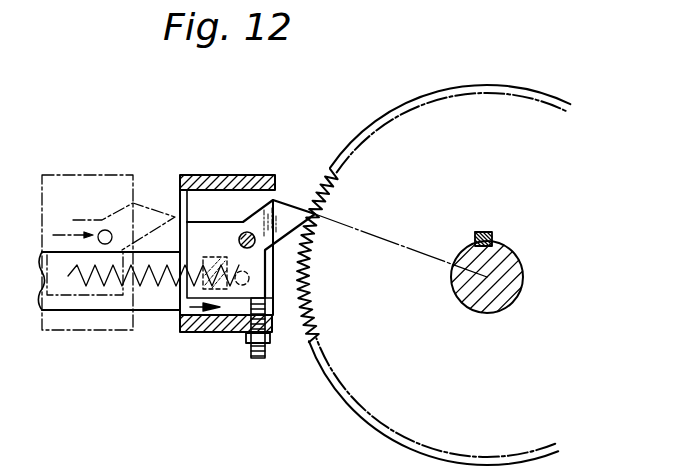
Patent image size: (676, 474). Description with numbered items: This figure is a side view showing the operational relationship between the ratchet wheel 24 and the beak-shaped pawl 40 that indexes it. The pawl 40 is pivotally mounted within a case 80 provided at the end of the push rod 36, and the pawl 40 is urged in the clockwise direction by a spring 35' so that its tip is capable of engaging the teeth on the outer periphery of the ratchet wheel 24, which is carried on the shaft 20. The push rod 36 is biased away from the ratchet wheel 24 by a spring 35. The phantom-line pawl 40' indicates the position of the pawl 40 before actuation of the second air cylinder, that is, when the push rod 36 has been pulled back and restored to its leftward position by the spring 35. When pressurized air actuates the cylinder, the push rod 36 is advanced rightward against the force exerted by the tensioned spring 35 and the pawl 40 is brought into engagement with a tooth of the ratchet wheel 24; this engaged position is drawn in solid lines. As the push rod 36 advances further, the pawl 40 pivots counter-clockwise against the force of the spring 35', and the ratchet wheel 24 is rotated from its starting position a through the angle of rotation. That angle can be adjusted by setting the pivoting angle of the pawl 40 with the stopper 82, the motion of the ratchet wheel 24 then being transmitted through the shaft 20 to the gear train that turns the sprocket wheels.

The ratchet wheel 24 is at (418, 100).
The shaft 20 is at (505, 256).
The position a is at (405, 258).
The case 80 is at (235, 175).
The beak-shaped pawl 40 is at (256, 208).
The pawl in phantom position 40' is at (108, 224).
The spring 35 is at (109, 319).
The push rod 36 is at (142, 298).
The spring 35' is at (211, 326).
The stopper 82 is at (270, 332).